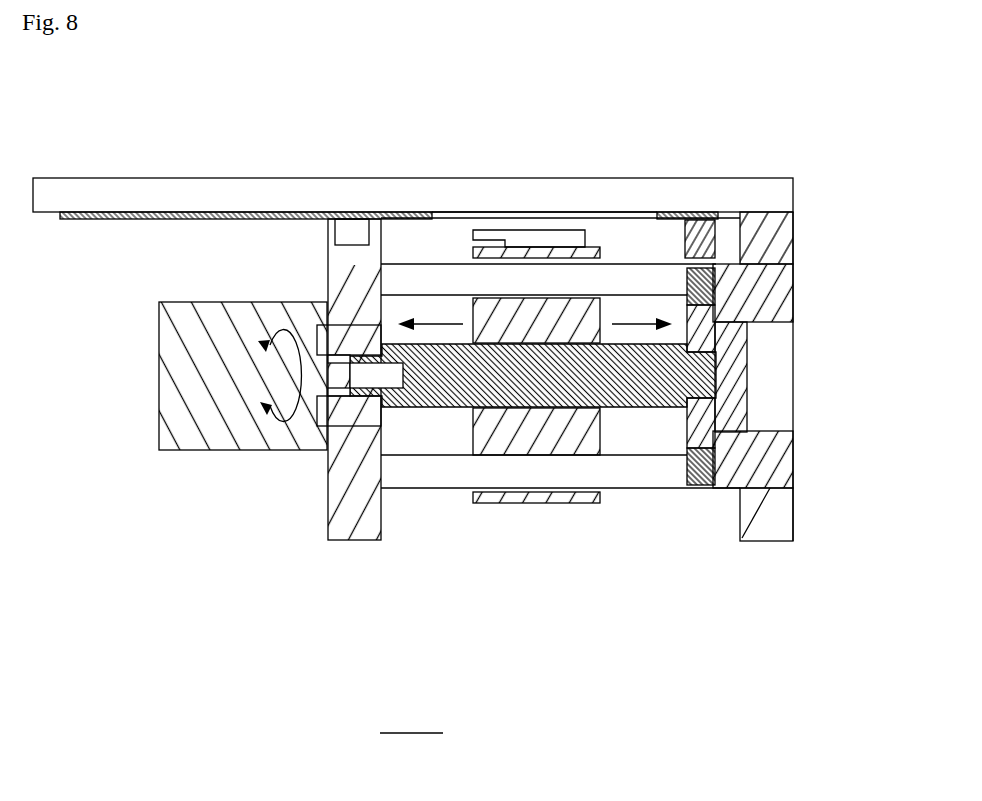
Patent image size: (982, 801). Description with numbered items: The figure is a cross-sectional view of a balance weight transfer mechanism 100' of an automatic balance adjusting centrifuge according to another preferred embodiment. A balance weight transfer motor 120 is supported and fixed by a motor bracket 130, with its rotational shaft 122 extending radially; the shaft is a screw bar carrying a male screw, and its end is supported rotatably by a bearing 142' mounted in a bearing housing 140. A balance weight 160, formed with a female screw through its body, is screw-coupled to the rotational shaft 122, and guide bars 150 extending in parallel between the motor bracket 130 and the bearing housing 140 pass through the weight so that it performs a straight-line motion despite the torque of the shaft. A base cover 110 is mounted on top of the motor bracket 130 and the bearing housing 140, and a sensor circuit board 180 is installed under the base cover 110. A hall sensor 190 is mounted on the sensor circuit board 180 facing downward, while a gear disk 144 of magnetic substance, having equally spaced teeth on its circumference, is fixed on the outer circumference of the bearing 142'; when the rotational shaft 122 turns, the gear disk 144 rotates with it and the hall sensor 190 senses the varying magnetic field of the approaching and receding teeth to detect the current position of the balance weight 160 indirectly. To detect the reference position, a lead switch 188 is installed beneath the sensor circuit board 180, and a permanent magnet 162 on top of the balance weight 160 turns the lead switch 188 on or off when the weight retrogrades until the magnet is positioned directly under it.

The balance weight transfer mechanism 100' is at (411, 717).
The base cover 110 is at (218, 187).
The balance weight transfer motor 120 is at (177, 415).
The rotational shaft 122 is at (643, 407).
The motor bracket 130 is at (353, 530).
The bearing housing 140 is at (780, 225).
The bearing 142' is at (807, 376).
The gear disk 144 is at (700, 470).
The guide bar 150 is at (627, 280).
The balance weight 160 is at (520, 498).
The permanent magnet 162 is at (537, 237).
The sensor circuit board 180 is at (75, 220).
The lead switch 188 is at (357, 236).
The hall sensor 190 is at (730, 233).